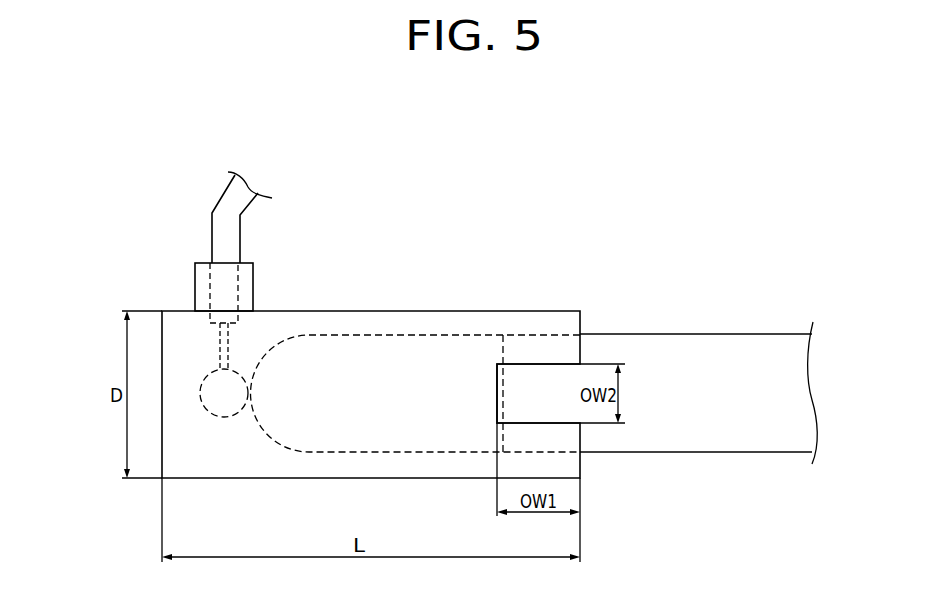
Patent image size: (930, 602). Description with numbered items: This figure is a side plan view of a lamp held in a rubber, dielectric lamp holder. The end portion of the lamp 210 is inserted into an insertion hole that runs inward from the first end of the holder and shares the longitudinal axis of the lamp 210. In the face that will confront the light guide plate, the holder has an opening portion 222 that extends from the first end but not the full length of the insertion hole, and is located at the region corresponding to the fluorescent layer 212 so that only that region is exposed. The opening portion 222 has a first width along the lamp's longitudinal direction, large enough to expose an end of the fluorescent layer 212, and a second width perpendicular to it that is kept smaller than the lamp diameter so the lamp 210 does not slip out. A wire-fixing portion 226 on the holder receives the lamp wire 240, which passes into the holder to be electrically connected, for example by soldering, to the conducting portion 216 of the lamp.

The lamp 210 is at (702, 334).
The fluorescent layer 212 is at (503, 357).
The conducting portion 216 is at (238, 394).
The opening portion 222 is at (547, 388).
The wire-fixing portion 226 is at (200, 292).
The lamp wire 240 is at (216, 222).